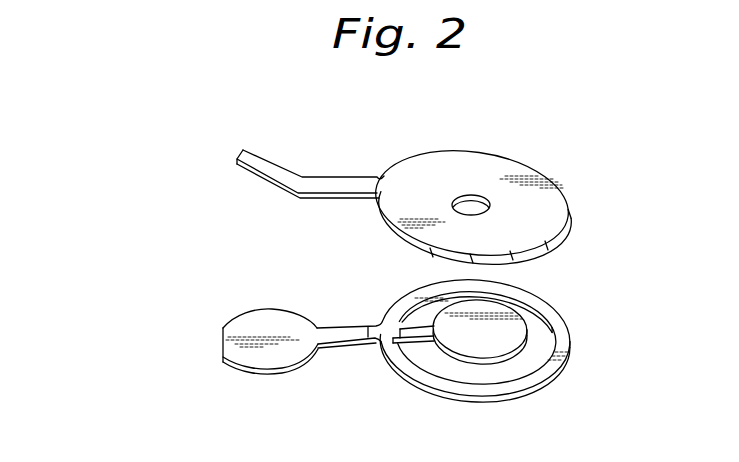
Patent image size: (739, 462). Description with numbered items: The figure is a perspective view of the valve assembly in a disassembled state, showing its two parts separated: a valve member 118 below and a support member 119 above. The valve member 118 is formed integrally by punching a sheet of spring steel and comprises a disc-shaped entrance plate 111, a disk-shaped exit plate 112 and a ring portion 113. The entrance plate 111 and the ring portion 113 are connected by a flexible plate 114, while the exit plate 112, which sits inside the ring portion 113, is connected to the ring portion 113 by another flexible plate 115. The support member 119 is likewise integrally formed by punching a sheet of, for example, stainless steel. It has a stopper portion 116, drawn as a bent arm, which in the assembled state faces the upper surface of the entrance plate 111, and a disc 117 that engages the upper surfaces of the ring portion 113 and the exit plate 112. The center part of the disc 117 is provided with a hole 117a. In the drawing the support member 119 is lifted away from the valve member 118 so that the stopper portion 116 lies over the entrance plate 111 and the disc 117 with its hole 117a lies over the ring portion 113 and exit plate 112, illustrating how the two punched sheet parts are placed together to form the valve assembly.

The entrance plate 111 is at (253, 322).
The exit plate 112 is at (523, 318).
The ring portion 113 is at (566, 346).
The flexible plate 114 is at (350, 340).
The flexible plate 115 is at (416, 347).
The stopper portion 116 is at (302, 178).
The disc 117 is at (560, 208).
The hole 117a is at (490, 196).
The valve member 118 is at (417, 348).
The support member 119 is at (428, 177).